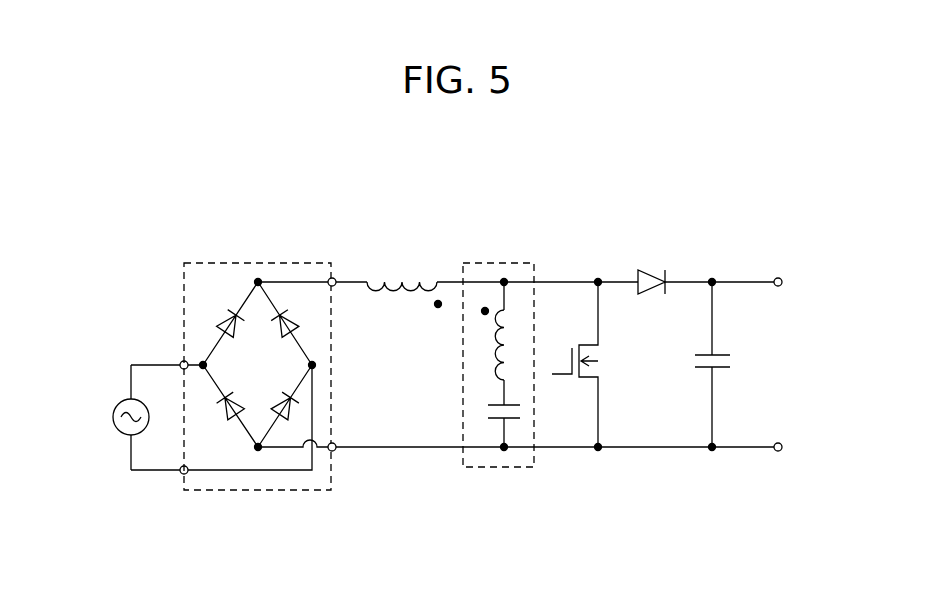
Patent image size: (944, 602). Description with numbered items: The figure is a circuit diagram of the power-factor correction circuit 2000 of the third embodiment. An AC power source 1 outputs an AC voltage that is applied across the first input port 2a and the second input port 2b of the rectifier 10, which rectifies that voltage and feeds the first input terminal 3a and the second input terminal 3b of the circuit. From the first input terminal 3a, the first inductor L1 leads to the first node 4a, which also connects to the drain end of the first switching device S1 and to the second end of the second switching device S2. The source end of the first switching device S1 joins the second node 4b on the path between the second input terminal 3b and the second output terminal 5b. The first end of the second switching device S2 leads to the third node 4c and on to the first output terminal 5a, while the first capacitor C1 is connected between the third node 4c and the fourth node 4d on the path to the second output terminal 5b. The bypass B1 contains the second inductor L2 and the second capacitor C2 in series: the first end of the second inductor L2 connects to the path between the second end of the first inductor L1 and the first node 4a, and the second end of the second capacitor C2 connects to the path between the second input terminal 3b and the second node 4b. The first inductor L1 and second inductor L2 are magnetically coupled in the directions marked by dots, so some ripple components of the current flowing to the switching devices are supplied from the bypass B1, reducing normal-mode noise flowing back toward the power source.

The power-factor correction circuit 2000 is at (467, 161).
The AC power source 1 is at (114, 405).
The first input port 2a is at (182, 361).
The second input port 2b is at (182, 475).
The rectifier 10 is at (270, 262).
The first input terminal 3a is at (334, 278).
The second input terminal 3b is at (334, 450).
The first inductor L1 is at (404, 279).
The bypass B1 is at (476, 341).
The second inductor L2 is at (483, 347).
The second capacitor C2 is at (483, 412).
The first switching device S1 is at (592, 364).
The first node 4a is at (596, 280).
The second node 4b is at (600, 450).
The second switching device S2 is at (652, 267).
The third node 4c is at (714, 278).
The fourth node 4d is at (714, 450).
The first capacitor C1 is at (729, 364).
The first output terminal 5a is at (795, 284).
The second output terminal 5b is at (795, 448).